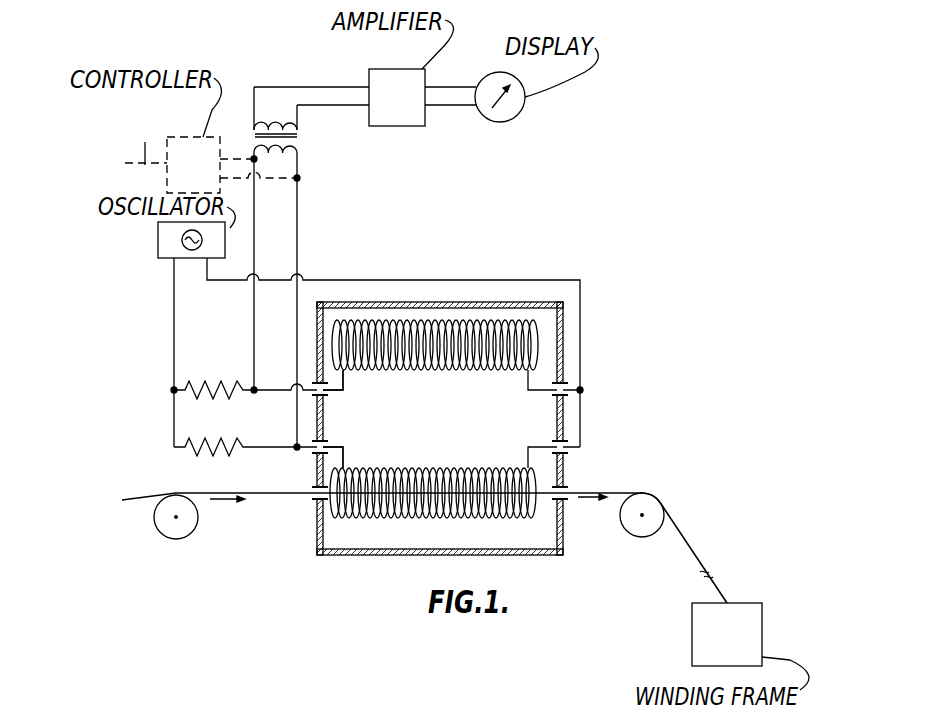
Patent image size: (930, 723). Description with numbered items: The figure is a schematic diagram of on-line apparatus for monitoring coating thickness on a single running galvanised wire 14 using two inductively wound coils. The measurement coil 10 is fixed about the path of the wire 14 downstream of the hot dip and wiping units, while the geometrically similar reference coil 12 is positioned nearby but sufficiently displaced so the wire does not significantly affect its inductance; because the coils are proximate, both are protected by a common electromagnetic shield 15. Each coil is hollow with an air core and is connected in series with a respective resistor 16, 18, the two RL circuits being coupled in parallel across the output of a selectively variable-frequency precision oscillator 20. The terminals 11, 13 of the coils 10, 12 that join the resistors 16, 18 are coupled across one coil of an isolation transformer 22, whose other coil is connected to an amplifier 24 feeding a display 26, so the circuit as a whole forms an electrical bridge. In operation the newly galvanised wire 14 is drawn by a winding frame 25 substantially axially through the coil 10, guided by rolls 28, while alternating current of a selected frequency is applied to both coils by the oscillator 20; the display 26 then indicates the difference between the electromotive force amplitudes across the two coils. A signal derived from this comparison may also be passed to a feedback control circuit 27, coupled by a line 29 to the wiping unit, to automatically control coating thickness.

The measurement coil 10 is at (511, 518).
The terminal of measurement coil 11 is at (345, 455).
The reference coil 12 is at (508, 372).
The terminal of reference coil 13 is at (345, 383).
The galvanised wire 14 is at (608, 490).
The electromagnetic shield 15 is at (543, 558).
The resistor 16 is at (205, 443).
The resistor 18 is at (203, 387).
The oscillator 20 is at (165, 258).
The isolation transformer 22 is at (303, 140).
The amplifier 24 is at (410, 108).
The winding frame 25 is at (740, 645).
The display 26 is at (513, 108).
The feedback control circuit 27 is at (206, 180).
The guide rolls 28 is at (182, 528).
The line 29 is at (146, 139).